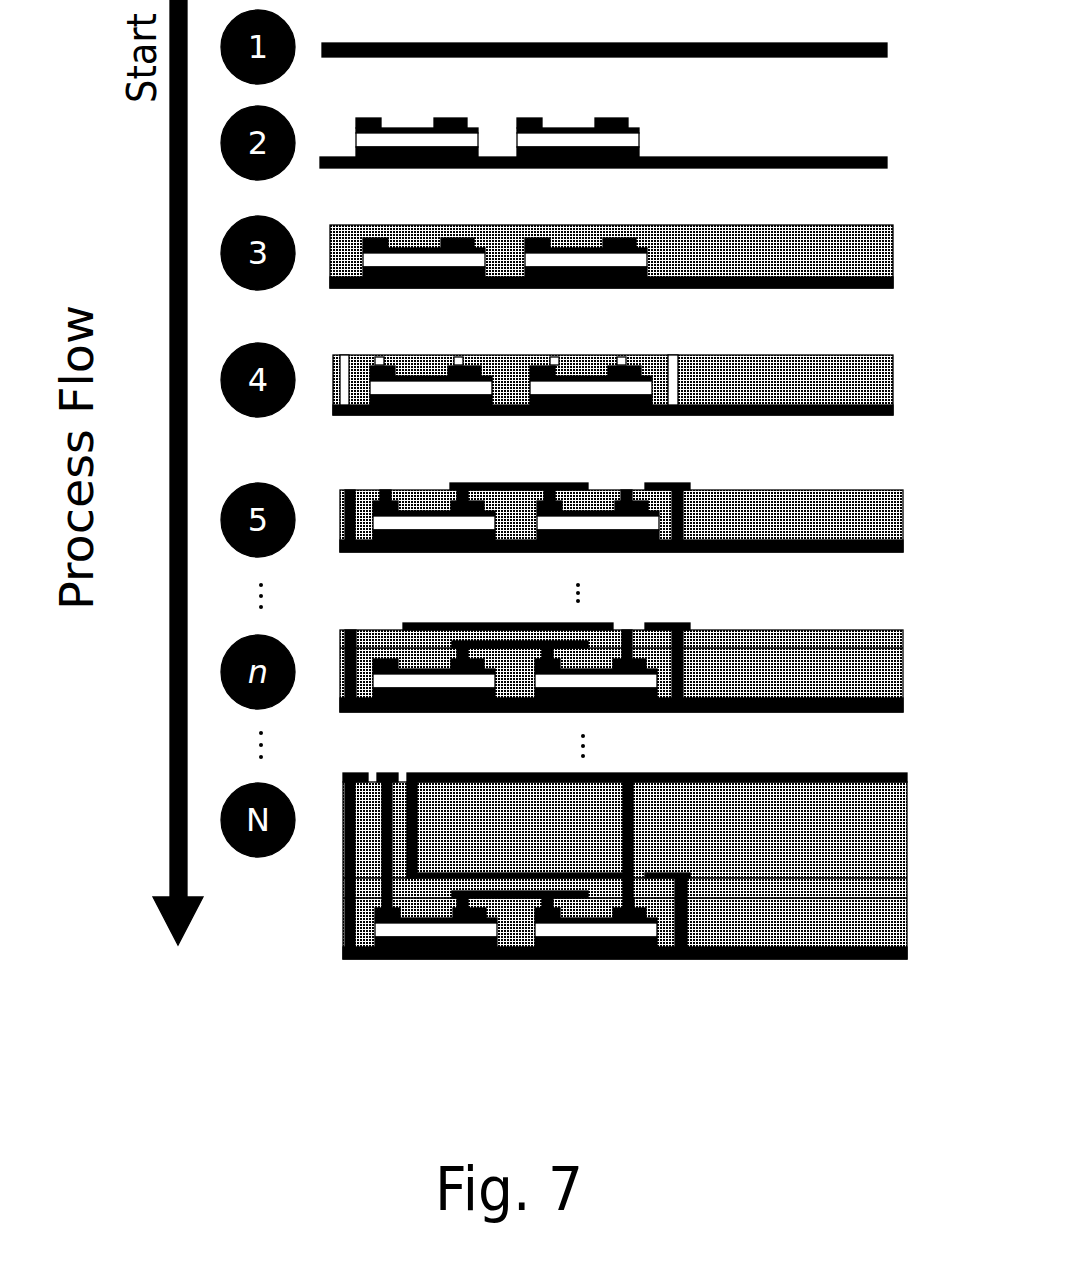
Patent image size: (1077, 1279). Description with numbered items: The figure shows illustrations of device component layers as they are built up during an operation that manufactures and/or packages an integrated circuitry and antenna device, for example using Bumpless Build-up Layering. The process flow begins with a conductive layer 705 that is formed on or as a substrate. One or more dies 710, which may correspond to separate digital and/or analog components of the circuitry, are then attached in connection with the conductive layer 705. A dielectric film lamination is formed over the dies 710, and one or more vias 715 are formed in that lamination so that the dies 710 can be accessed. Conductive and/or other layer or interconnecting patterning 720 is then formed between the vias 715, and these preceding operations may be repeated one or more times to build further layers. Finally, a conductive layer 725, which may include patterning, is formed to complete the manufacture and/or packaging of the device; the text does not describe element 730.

The conductive layer 705 is at (874, 52).
The dies 710 is at (580, 128).
The vias 715 is at (871, 246).
The interconnecting patterning 720 is at (345, 356).
The conductive layer 725 is at (488, 485).
The top conductive layer 730 is at (733, 771).